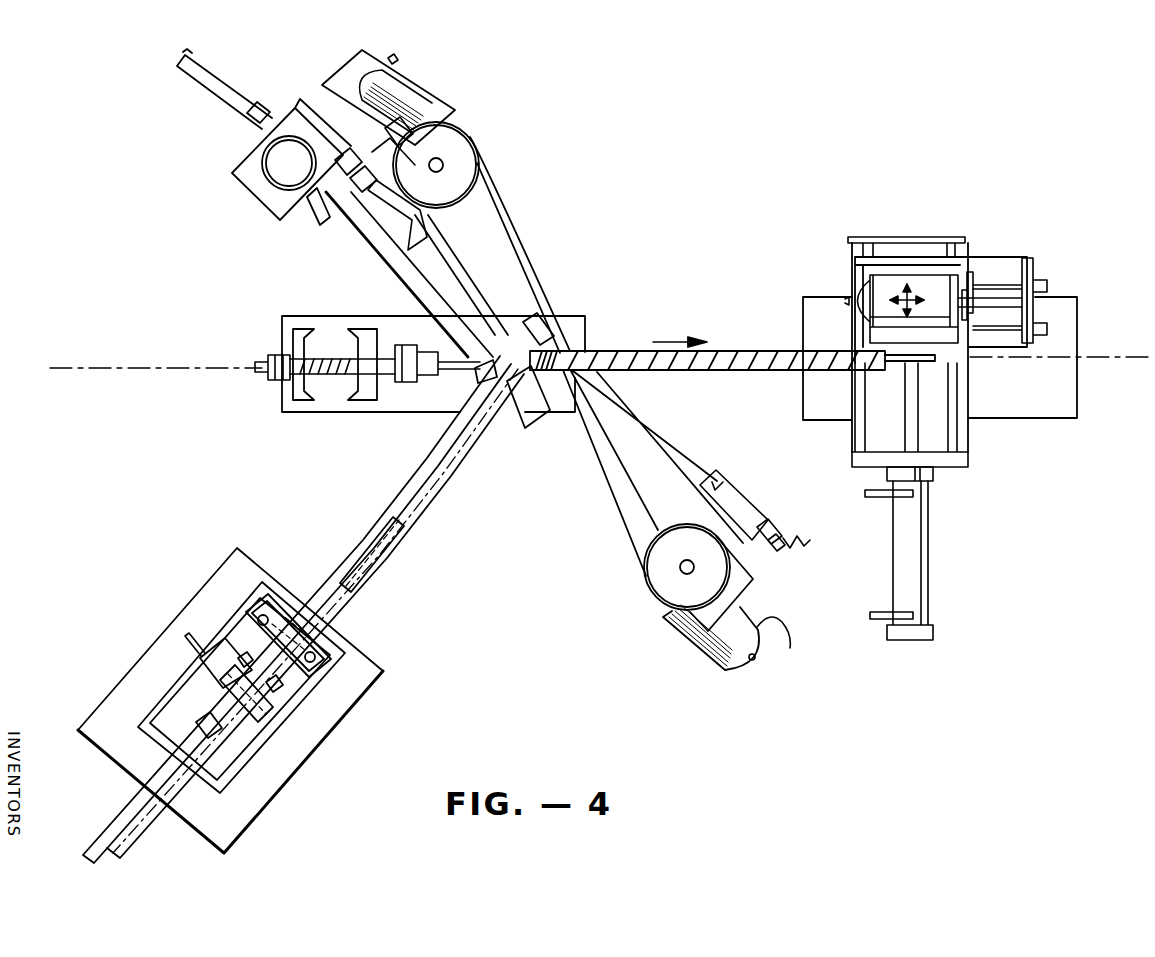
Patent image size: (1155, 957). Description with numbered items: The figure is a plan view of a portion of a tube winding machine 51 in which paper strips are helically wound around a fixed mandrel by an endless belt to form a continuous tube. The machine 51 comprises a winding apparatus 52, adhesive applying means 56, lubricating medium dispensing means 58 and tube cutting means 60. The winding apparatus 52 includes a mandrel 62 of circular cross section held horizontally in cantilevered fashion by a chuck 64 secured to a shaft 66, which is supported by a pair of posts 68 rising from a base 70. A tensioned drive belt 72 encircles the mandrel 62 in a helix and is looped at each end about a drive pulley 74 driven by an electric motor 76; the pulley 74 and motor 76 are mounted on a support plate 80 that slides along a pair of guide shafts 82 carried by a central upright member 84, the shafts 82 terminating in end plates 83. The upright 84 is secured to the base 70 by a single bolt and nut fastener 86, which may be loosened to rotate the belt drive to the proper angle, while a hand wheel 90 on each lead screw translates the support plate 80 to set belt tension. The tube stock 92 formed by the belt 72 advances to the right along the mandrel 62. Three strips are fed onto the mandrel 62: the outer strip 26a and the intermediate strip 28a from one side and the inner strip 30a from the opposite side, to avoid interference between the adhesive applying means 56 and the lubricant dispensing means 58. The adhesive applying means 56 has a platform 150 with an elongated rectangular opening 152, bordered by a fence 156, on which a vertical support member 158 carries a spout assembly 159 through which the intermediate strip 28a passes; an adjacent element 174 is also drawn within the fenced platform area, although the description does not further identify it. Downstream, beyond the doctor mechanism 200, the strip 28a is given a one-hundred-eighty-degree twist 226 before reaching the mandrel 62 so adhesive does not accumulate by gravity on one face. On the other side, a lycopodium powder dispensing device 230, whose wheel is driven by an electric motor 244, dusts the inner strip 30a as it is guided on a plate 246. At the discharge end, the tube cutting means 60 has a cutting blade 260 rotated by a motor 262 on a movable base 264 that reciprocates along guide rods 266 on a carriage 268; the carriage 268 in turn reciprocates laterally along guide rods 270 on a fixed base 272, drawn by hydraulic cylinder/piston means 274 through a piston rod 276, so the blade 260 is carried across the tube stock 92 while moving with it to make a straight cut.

The tube winding machine 51 is at (610, 199).
The winding apparatus 52 is at (427, 356).
The adhesive applying means 56 is at (245, 694).
The lubricating medium dispensing means 58 is at (478, 358).
The tube cutting means 60 is at (953, 422).
The mandrel 62 is at (462, 372).
The chuck 64 is at (405, 343).
The shaft 66 is at (355, 372).
The posts 68 is at (283, 340).
The base 70 is at (423, 405).
The drive belt 72 is at (545, 298).
The drive pulley 74 is at (462, 148).
The electric motor 76 is at (421, 88).
The support plate 80 is at (392, 205).
The guide shafts 82 is at (688, 457).
The end plates 83 is at (788, 522).
The central upright member 84 is at (548, 323).
The bolt and nut fastener 86 is at (513, 415).
The hand wheel 90 is at (805, 537).
The tube stock 92 is at (762, 350).
The platform 150 is at (323, 733).
The elongated rectangular opening 152 is at (240, 728).
The fence 156 is at (247, 773).
The vertical support member 158 is at (213, 655).
The spout assembly 159 is at (283, 680).
The rod 174 is at (187, 642).
The doctor mechanism 200 is at (280, 596).
The twist 226 is at (390, 517).
The lycopodium powder dispensing device 230 is at (289, 132).
The electric motor 244 is at (324, 82).
The plate 246 is at (235, 137).
The cutting blade 260 is at (973, 278).
The motor 262 is at (943, 282).
The movable base 264 is at (892, 272).
The guide rods 266 is at (1036, 275).
The carriage 268 is at (1003, 277).
The guide rods 270 is at (865, 400).
The fixed base 272 is at (1078, 388).
The hydraulic cylinder/piston means 274 is at (927, 530).
The piston rod 276 is at (925, 452).
The intermediate strip 28a is at (425, 457).
The outer strip 26a is at (463, 458).
The inner strip 30a is at (380, 257).